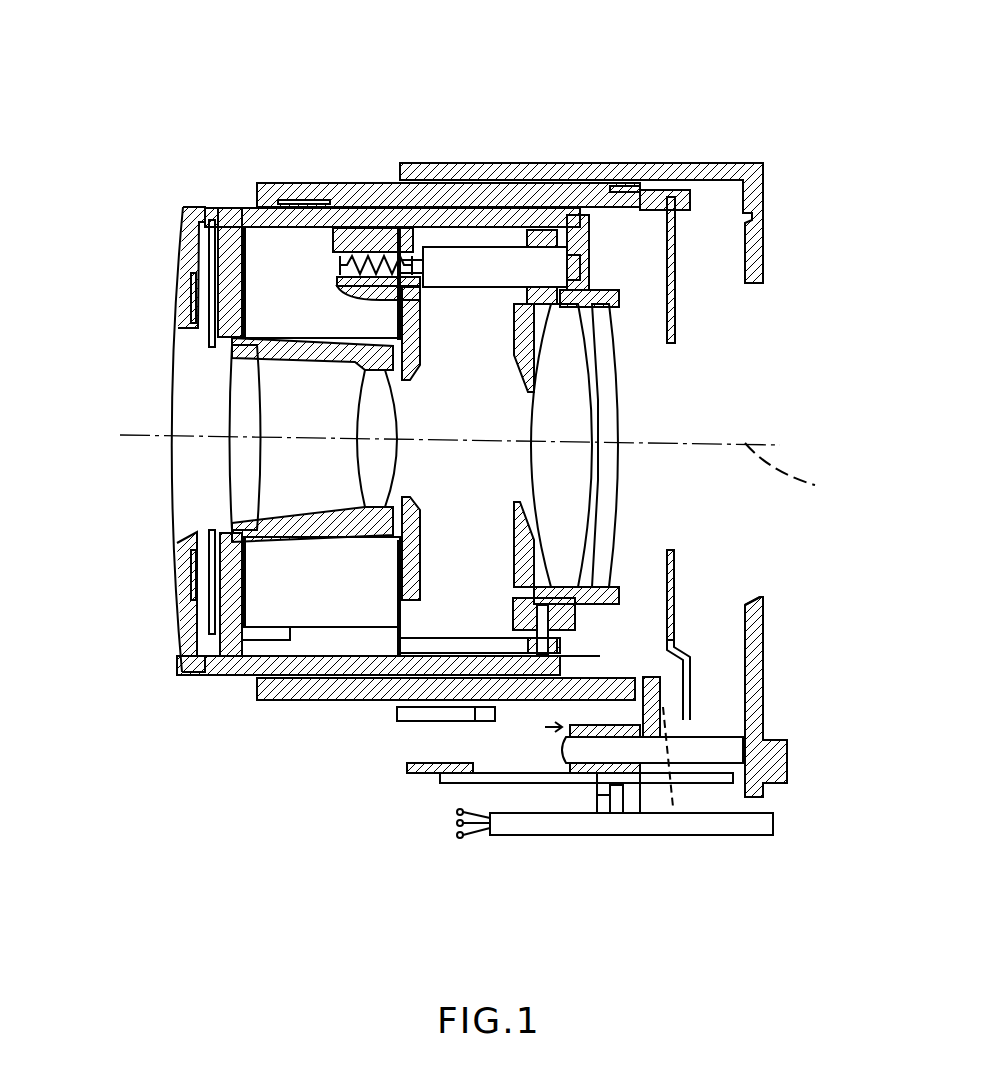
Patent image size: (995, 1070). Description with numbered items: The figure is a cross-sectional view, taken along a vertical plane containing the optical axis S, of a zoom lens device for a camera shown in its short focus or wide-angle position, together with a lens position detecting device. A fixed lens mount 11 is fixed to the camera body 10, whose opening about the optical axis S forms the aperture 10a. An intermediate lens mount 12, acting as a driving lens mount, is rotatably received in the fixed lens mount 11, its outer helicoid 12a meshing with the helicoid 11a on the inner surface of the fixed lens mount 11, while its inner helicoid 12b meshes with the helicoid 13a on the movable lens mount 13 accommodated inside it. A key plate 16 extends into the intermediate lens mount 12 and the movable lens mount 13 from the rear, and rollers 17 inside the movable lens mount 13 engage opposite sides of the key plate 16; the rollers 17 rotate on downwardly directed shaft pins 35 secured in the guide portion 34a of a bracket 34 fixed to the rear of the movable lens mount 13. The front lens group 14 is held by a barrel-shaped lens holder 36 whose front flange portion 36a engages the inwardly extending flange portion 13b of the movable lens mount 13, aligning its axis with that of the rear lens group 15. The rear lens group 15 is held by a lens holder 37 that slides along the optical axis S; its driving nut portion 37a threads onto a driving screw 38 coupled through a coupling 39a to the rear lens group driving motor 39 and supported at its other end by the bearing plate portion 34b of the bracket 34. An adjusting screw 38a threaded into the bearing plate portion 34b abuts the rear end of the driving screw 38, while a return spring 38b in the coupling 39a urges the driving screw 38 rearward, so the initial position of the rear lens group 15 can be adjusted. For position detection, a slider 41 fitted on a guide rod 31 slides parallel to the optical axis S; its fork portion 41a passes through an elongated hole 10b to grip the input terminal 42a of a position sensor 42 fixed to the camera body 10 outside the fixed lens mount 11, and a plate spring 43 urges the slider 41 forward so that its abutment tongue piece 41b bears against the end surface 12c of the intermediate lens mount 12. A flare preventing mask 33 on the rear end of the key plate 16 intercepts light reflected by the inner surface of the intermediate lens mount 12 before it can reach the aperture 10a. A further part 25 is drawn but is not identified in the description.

The camera body 10 is at (757, 668).
The aperture 10a is at (757, 600).
The elongated hole 10b is at (478, 778).
The fixed lens mount 11 is at (705, 165).
The helicoid 11a is at (542, 180).
The intermediate lens mount 12 is at (372, 193).
The outer helicoid 12a is at (597, 183).
The inner helicoid 12b is at (328, 198).
The end surface 12c is at (648, 208).
The movable lens mount 13 is at (235, 207).
The helicoid 13a is at (487, 208).
The flange portion 13b is at (222, 578).
The front lens group 14 is at (232, 402).
The rear lens group 15 is at (585, 474).
The key plate 16 is at (408, 645).
The rollers 17 is at (530, 640).
The light shield 25 is at (645, 186).
The guide rod 31 is at (745, 750).
The flare preventing mask 33 is at (600, 287).
The bracket 34 is at (595, 272).
The guide portion 34a is at (515, 608).
The bearing plate portion 34b is at (594, 257).
The shaft pins 35 is at (562, 628).
The lens holder 36 is at (320, 522).
The flange portion 36a is at (232, 533).
The lens holder 37 is at (615, 330).
The driving nut portion 37a is at (514, 310).
The driving screw 38 is at (455, 247).
The adjusting screw 38a is at (610, 307).
The return spring 38b is at (335, 262).
The rear lens group driving motor 39 is at (258, 258).
The coupling 39a is at (382, 255).
The slider 41 is at (545, 727).
The fork portion 41a is at (600, 795).
The abutment tongue piece 41b is at (665, 660).
The position sensor 42 is at (760, 835).
The input terminal 42a is at (617, 813).
The plate spring 43 is at (673, 810).
The optical axis S is at (795, 474).